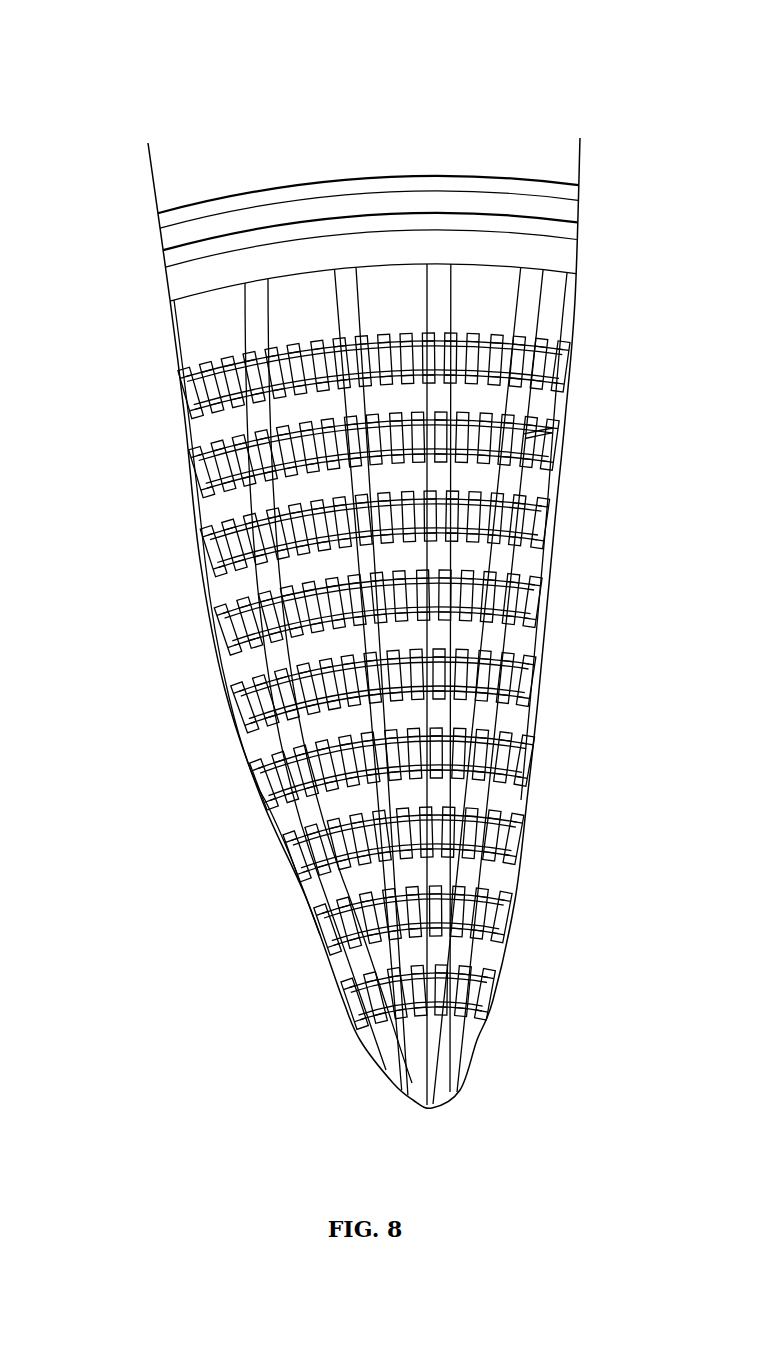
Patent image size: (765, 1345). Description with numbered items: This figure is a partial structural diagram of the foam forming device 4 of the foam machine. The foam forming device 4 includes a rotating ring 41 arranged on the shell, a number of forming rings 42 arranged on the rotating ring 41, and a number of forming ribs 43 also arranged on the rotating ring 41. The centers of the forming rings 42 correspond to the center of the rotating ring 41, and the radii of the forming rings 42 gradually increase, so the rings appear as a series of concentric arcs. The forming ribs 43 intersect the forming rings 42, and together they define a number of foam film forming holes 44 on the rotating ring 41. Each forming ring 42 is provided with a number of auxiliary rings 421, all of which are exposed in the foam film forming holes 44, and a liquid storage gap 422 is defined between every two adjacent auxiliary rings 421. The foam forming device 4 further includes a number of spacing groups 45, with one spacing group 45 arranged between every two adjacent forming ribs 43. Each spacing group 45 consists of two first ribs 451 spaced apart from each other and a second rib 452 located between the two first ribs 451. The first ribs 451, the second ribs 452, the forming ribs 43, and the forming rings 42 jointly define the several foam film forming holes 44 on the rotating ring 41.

The foam forming device 4 is at (420, 37).
The rotating ring 41 is at (572, 230).
The forming ring 42 is at (427, 681).
The auxiliary ring 421 is at (545, 432).
The liquid storage gap 422 is at (564, 420).
The forming rib 43 is at (183, 355).
The foam film forming hole 44 is at (548, 568).
The spacing group 45 is at (383, 589).
The first rib 451 is at (262, 292).
The second rib 452 is at (333, 292).